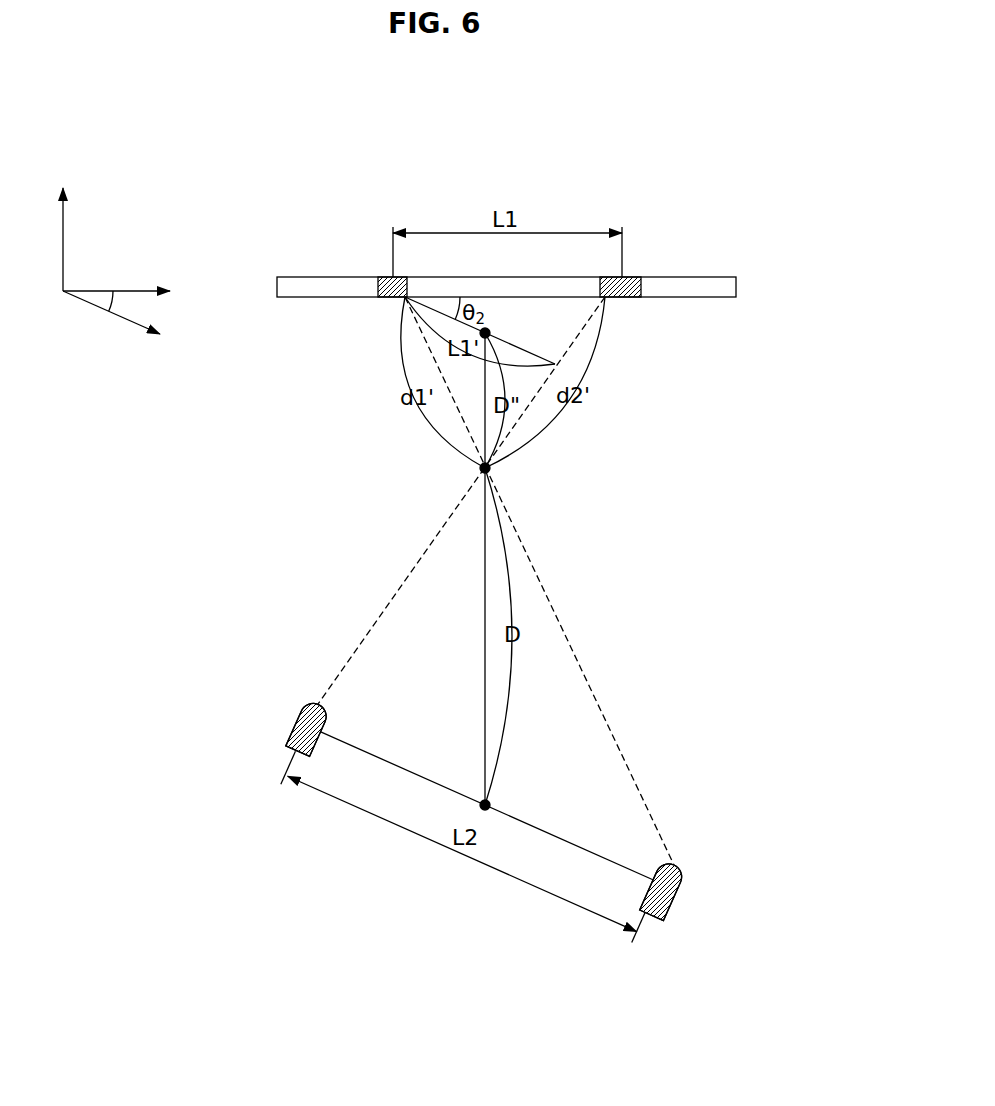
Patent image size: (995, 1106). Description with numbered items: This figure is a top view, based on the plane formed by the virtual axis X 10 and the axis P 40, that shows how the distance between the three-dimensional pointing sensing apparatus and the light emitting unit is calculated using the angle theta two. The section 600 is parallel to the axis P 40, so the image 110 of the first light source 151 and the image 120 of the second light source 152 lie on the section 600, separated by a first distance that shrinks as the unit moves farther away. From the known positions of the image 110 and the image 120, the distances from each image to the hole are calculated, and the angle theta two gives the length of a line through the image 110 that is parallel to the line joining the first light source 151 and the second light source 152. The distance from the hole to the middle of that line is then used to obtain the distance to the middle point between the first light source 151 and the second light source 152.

The virtual axis X 10 is at (62, 154).
The axis P 40 is at (185, 278).
The image of the first light source 110 is at (380, 278).
The image of the second light source 120 is at (637, 277).
The section 600 is at (720, 277).
The first light source 151 is at (675, 888).
The second light source 152 is at (297, 722).